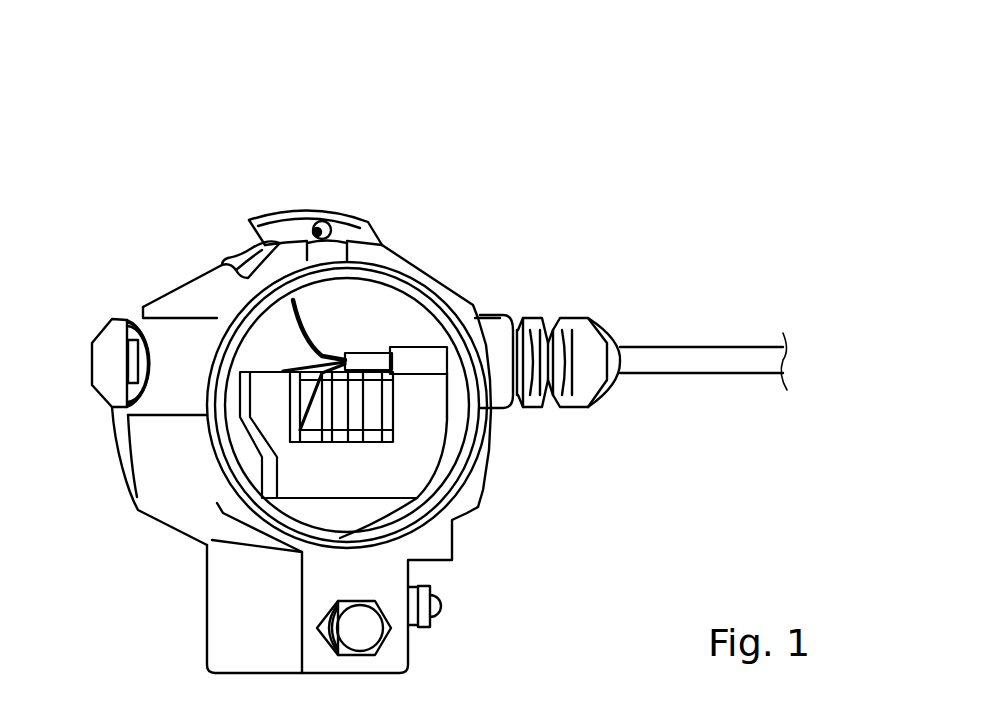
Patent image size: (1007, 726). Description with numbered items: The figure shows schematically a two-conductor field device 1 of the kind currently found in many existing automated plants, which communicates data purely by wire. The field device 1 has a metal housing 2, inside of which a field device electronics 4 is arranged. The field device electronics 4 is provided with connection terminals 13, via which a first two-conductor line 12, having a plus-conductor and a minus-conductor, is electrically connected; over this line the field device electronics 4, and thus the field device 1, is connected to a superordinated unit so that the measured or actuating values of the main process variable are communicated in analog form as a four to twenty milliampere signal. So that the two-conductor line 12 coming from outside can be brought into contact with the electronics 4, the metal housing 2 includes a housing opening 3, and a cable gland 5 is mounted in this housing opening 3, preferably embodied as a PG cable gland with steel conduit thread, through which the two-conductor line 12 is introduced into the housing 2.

The two-conductor field device 1 is at (595, 168).
The metal housing 2 is at (335, 201).
The housing opening 3 is at (493, 300).
The field device electronics 4 is at (406, 414).
The cable gland 5 is at (603, 300).
The first two-conductor line 12 is at (688, 345).
The connection terminals 13 is at (352, 409).